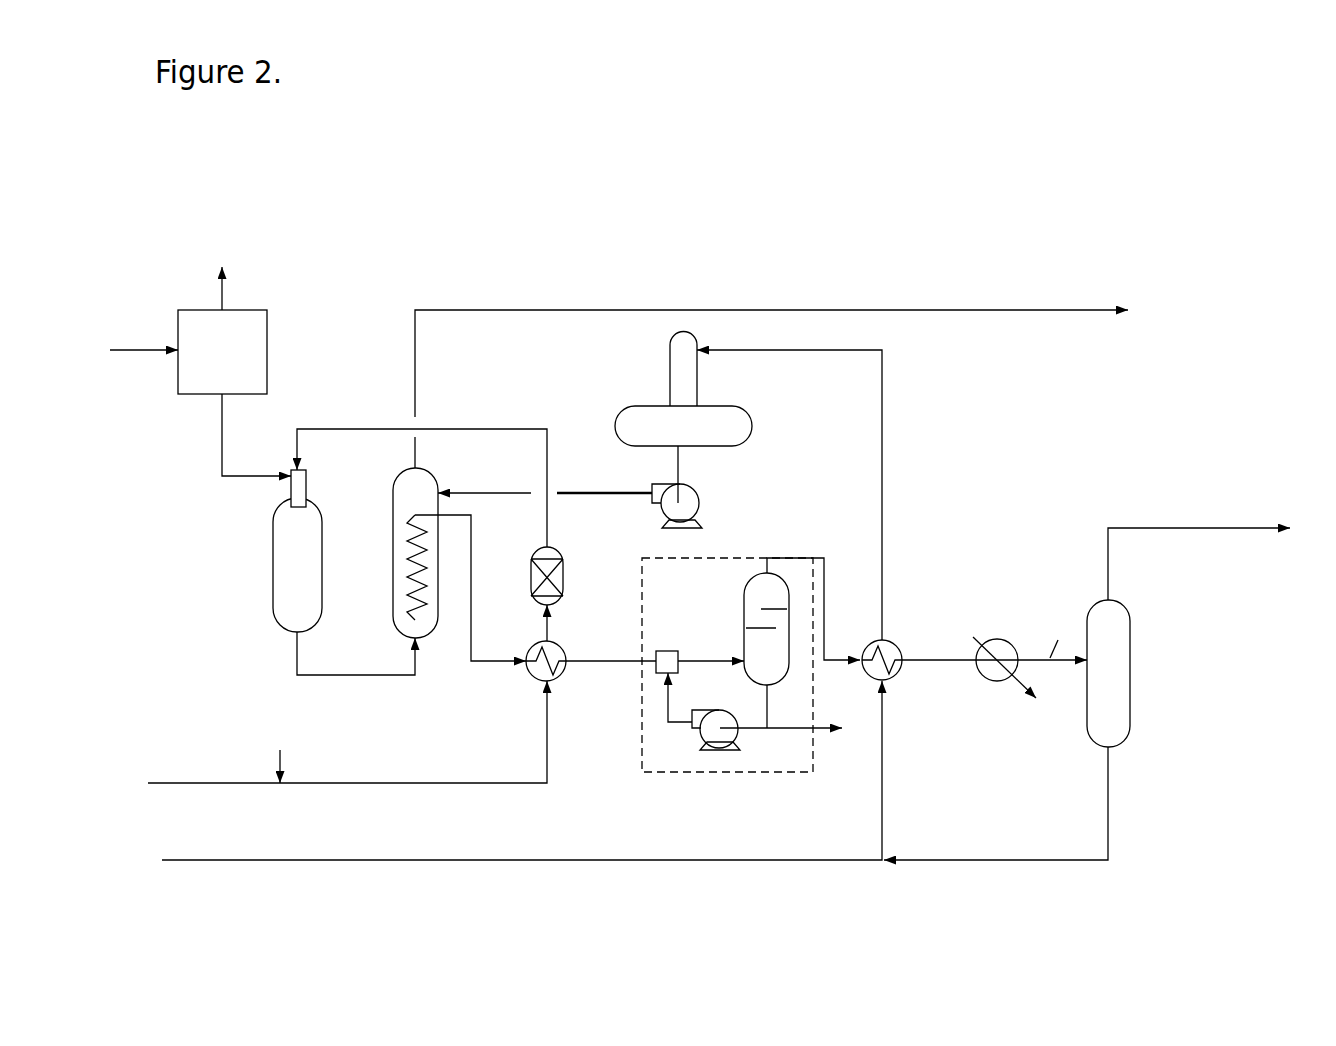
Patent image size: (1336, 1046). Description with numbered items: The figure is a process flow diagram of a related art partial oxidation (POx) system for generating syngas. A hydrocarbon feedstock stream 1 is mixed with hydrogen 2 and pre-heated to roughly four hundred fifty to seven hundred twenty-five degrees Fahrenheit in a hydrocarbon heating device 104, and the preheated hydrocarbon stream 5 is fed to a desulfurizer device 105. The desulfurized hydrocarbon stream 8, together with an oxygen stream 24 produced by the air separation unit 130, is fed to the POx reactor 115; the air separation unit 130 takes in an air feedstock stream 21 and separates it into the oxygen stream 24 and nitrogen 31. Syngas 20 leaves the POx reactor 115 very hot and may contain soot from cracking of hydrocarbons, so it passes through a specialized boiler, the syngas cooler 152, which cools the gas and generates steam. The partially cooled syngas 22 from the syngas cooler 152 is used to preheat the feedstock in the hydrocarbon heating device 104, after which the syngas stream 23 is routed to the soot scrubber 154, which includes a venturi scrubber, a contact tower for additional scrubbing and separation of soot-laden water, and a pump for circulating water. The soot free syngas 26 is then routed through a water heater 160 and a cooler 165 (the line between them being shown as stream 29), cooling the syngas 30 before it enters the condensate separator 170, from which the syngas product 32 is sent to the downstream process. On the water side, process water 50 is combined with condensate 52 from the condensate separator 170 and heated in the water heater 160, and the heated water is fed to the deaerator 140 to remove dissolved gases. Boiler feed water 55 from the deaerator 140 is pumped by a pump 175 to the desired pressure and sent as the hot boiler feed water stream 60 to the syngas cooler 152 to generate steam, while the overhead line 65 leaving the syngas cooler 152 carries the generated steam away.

The hydrocarbon feedstock stream 1 is at (347, 732).
The hydrogen 2 is at (280, 751).
The preheated hydrocarbon stream 5 is at (560, 623).
The desulfurized hydrocarbon stream 8 is at (422, 472).
The syngas stream 20 is at (356, 653).
The air feedstock stream 21 is at (143, 366).
The partially cooled syngas 22 is at (470, 602).
The syngas stream 23 is at (655, 671).
The oxygen stream 24 is at (218, 450).
The soot free syngas 26 is at (813, 609).
The cooled stream 29 is at (935, 658).
The syngas 30 is at (1060, 634).
The nitrogen 31 is at (239, 288).
The syngas product 32 is at (1199, 551).
The process water 50 is at (522, 770).
The condensate 52 is at (996, 803).
The boiler feed water 55 is at (697, 474).
The hot boiler feed water stream 60 is at (545, 480).
The overhead stream 65 is at (771, 348).
The hydrocarbon heating device 104 is at (562, 670).
The desulfurizer device 105 is at (568, 575).
The POx reactor 115 is at (297, 551).
The air separation unit 130 is at (222, 352).
The deaerator 140 is at (683, 389).
The syngas cooler 152 is at (390, 574).
The soot scrubber 154 is at (700, 776).
The water heater 160 is at (895, 675).
The cooler 165 is at (1004, 673).
The condensate separator 170 is at (1138, 673).
The pump 175 is at (677, 515).